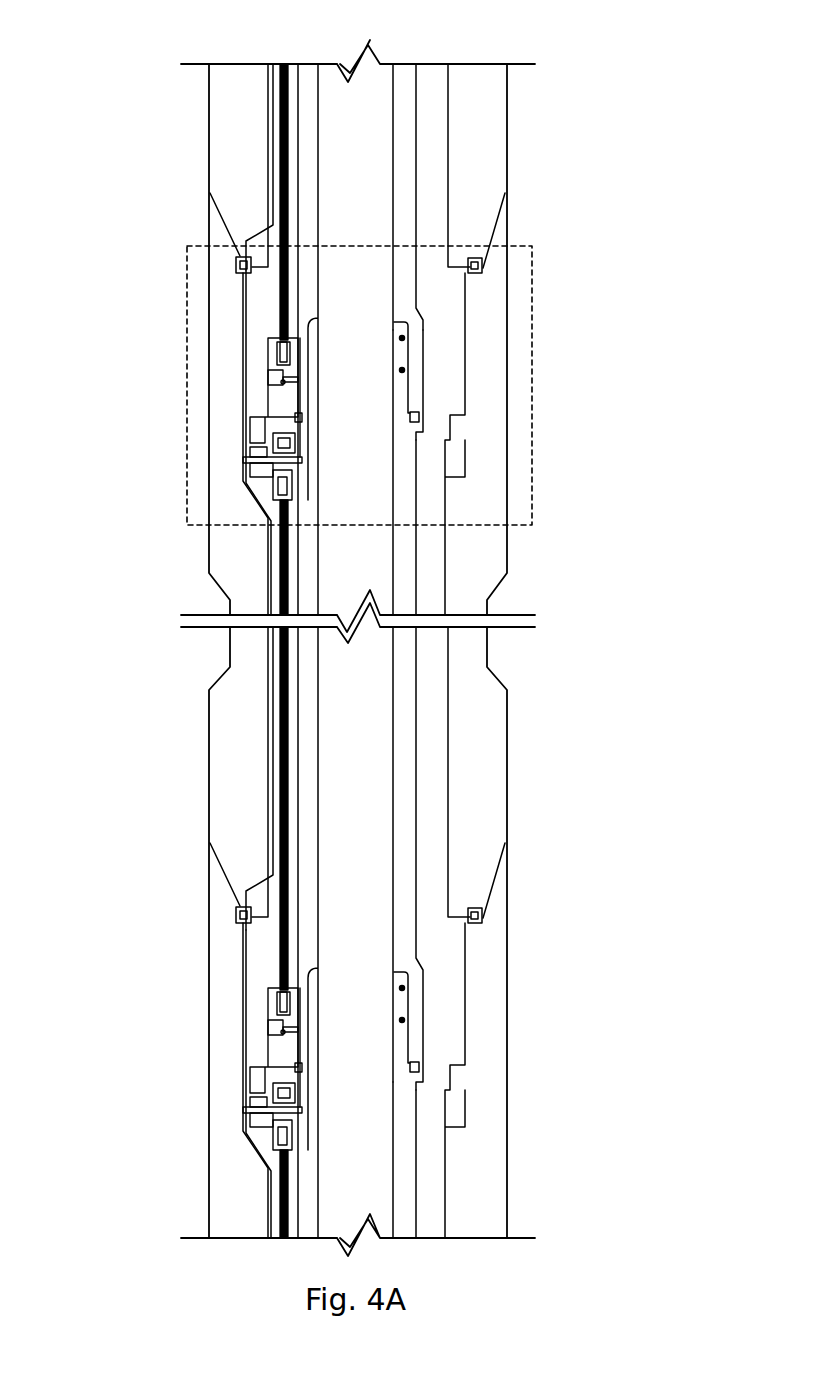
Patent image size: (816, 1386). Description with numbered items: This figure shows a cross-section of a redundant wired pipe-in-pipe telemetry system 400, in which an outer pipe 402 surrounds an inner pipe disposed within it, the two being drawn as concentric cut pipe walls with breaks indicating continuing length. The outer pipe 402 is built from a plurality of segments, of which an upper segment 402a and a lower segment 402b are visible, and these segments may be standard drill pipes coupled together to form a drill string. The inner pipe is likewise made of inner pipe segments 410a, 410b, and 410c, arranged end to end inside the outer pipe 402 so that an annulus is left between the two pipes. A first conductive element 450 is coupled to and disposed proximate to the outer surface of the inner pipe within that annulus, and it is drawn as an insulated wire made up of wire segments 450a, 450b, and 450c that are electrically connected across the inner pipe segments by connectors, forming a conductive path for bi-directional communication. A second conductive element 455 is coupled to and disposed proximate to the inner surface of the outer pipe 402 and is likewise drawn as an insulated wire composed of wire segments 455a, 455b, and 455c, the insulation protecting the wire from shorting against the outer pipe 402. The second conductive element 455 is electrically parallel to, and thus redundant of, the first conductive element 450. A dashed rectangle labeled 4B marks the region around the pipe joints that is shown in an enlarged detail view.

The redundant wired pipe-in-pipe telemetry system 400 is at (681, 72).
The outer pipe 402 is at (512, 130).
The outer pipe segment 402a is at (209, 91).
The outer pipe segment 402b is at (207, 319).
The inner pipe segment 410a is at (413, 232).
The inner pipe segment 410b is at (413, 568).
The inner pipe segment 410c is at (413, 1172).
The first conductive element 450 is at (280, 770).
The wire segment 450a is at (280, 143).
The wire segment 450b is at (280, 555).
The wire segment 450c is at (280, 1185).
The second conductive element 455 is at (273, 808).
The wire segment 455a is at (273, 177).
The wire segment 455b is at (273, 588).
The wire segment 455c is at (273, 1218).
The detail view region 4B is at (534, 378).